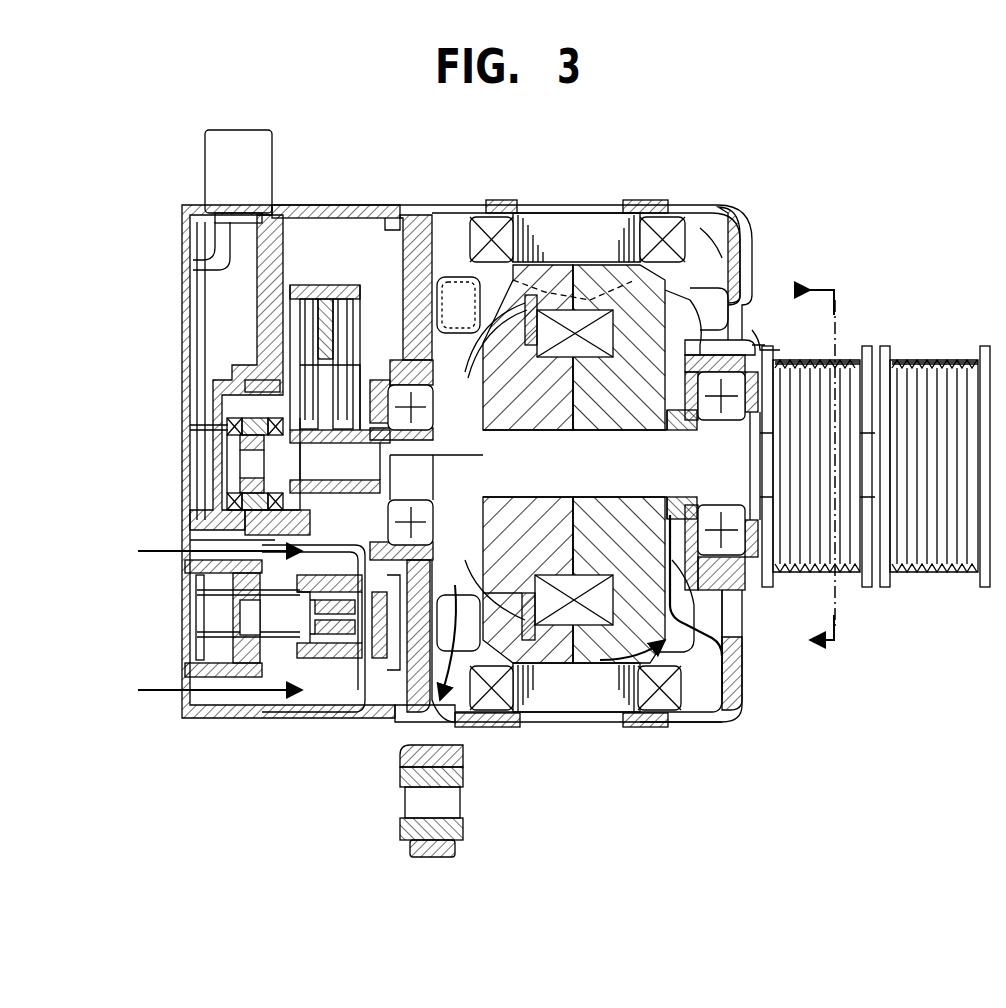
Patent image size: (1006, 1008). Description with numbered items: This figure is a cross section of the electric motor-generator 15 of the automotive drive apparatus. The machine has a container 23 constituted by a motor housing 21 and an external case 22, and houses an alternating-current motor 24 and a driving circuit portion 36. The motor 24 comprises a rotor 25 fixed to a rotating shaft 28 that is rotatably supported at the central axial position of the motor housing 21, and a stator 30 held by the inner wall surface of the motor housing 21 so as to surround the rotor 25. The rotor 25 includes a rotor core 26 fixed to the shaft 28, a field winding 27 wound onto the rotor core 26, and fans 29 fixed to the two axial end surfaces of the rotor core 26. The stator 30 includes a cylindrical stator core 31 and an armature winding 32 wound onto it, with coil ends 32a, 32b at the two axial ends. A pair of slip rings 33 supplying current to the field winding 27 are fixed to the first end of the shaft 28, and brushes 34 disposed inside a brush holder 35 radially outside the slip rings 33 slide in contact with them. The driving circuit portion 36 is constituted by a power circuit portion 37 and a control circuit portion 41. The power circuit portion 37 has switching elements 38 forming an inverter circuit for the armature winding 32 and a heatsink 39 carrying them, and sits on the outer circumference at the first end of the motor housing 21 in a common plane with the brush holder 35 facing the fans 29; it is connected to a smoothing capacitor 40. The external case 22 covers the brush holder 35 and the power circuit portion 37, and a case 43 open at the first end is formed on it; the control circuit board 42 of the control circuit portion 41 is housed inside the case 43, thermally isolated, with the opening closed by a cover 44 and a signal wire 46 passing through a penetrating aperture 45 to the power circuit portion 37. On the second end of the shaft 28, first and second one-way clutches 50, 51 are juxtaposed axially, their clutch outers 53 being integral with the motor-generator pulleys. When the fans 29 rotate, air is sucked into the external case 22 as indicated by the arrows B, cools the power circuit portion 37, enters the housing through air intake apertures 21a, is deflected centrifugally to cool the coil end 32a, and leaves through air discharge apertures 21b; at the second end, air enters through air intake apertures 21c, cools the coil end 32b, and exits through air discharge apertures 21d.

The vehicle alternator 15 is at (705, 143).
The motor housing 21 is at (405, 217).
The air intake apertures 21a is at (386, 722).
The air discharge apertures 21b is at (463, 775).
The air intake apertures 21c is at (730, 645).
The air discharge apertures 21d is at (697, 722).
The external case 22 is at (370, 206).
The container 23 is at (365, 150).
The alternating-current motor 24 is at (738, 212).
The rotor 25 is at (712, 690).
The rotor core 26 is at (615, 660).
The field winding 27 is at (567, 612).
The rotating shaft 28 is at (700, 605).
The fans 29 is at (700, 692).
The stator 30 is at (655, 150).
The stator core 31 is at (602, 213).
The armature winding 32 is at (655, 222).
The coil end 32a is at (490, 700).
The coil end 32b is at (655, 700).
The slip rings 33 is at (295, 462).
The brushes 34 is at (258, 333).
The brush holder 35 is at (325, 290).
The driving circuit portion 36 is at (301, 835).
The power circuit portion 37 is at (310, 805).
The switching elements 38 is at (280, 722).
The heatsink 39 is at (312, 722).
The smoothing capacitor 40 is at (347, 722).
The control circuit portion 41 is at (231, 805).
The control circuit board 42 is at (198, 722).
The case 43 is at (224, 722).
The cover 44 is at (183, 512).
The penetrating aperture 45 is at (300, 620).
The signal wire 46 is at (255, 597).
The first one-way clutch 50 is at (845, 578).
The second one-way clutch 51 is at (905, 578).
The clutch outers 53 is at (800, 360).
The arrows B is at (155, 700).